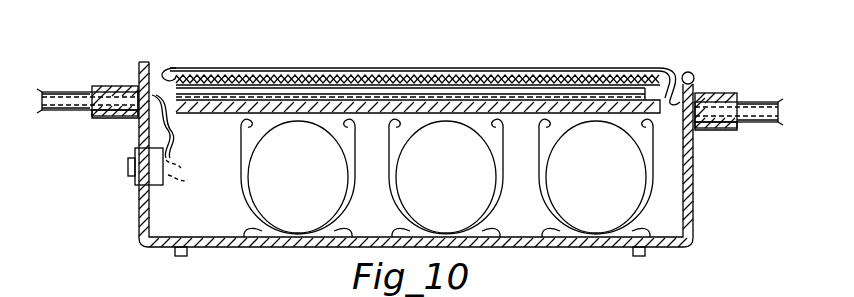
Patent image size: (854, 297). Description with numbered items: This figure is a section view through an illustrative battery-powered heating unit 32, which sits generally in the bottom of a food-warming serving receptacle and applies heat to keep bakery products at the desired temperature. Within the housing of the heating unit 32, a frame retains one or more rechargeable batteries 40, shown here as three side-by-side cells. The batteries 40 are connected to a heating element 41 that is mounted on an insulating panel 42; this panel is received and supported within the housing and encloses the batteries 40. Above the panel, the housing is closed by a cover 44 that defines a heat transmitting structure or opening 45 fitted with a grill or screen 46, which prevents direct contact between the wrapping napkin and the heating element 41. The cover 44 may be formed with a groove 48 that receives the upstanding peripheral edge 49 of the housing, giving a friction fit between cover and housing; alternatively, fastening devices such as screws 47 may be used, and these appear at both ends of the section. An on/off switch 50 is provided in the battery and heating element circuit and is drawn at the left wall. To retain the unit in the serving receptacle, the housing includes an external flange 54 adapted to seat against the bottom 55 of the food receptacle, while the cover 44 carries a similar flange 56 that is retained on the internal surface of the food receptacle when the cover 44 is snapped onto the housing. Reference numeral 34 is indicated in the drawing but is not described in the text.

The battery-powered heating unit 32 is at (691, 247).
The cover 34 is at (696, 78).
The rechargeable batteries 40 is at (313, 189).
The heating element 41 is at (401, 94).
The insulating panel 42 is at (358, 106).
The cover 44 is at (632, 77).
The heat transmitting structure or opening 45 is at (597, 70).
The grill or screen 46 is at (488, 80).
The screws 47 is at (110, 88).
The groove 48 is at (679, 72).
The upstanding peripheral edge 49 is at (692, 160).
The on/off switch 50 is at (145, 172).
The external flange 54 is at (113, 118).
The bottom of the food receptacle 55 is at (64, 113).
The flange 56 is at (117, 88).